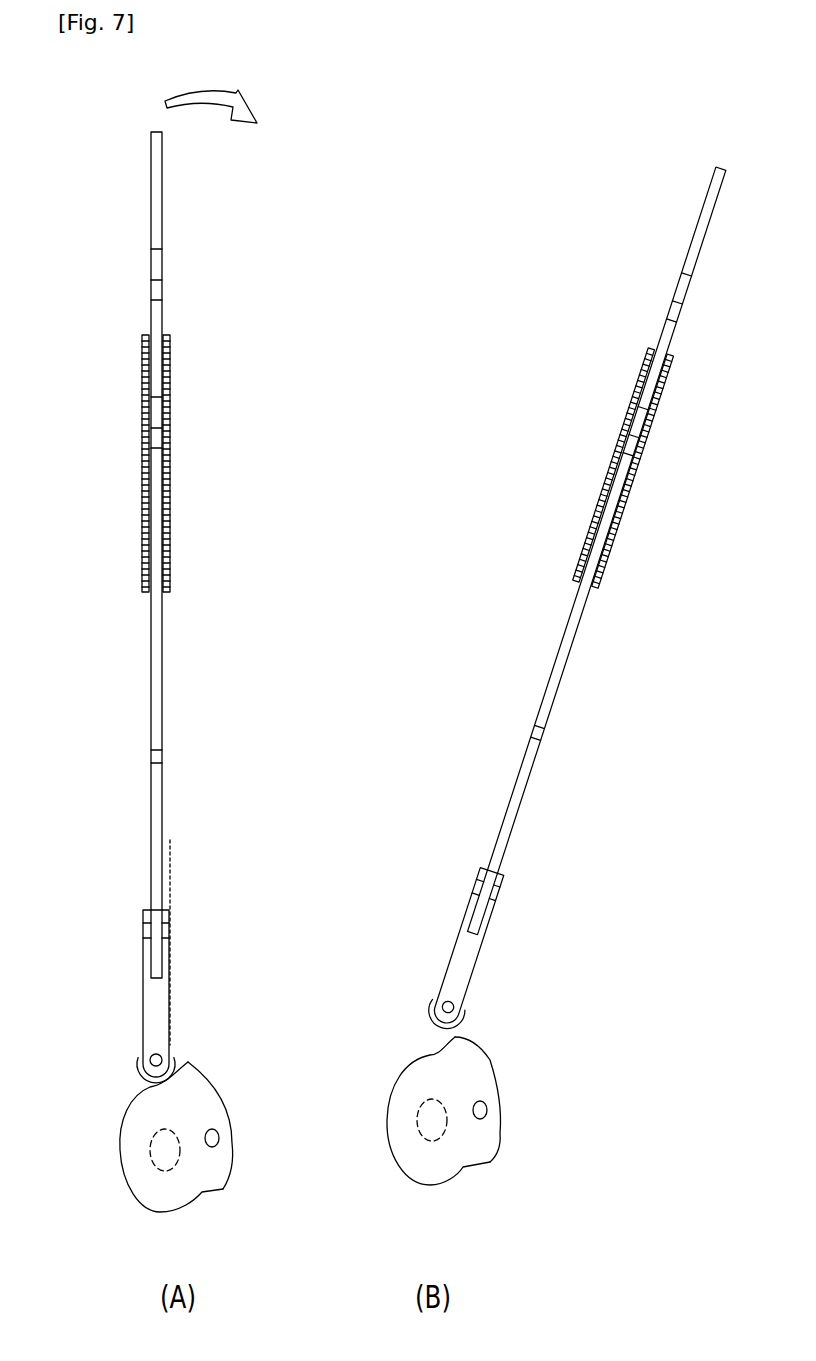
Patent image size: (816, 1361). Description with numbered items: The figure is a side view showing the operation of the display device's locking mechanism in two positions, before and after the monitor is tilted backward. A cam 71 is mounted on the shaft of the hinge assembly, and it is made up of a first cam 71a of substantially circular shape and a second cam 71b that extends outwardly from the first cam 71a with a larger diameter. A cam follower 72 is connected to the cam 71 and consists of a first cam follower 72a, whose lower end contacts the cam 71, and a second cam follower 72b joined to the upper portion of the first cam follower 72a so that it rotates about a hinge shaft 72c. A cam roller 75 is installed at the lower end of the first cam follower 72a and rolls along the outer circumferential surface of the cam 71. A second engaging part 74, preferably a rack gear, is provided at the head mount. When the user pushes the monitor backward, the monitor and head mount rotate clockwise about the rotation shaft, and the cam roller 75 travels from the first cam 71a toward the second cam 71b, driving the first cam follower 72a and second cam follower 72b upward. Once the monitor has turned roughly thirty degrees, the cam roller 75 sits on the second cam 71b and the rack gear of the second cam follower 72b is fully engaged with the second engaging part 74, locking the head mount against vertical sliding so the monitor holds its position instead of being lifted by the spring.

The cam 71 is at (323, 1140).
The first cam 71a is at (136, 1180).
The second cam 71b is at (233, 1117).
The cam follower 72 is at (434, 604).
The first cam follower 72a is at (166, 999).
The second cam follower 72b is at (155, 866).
The hinge shaft 72c is at (168, 931).
The second engaging part 74 is at (171, 465).
The cam roller 75 is at (140, 1062).